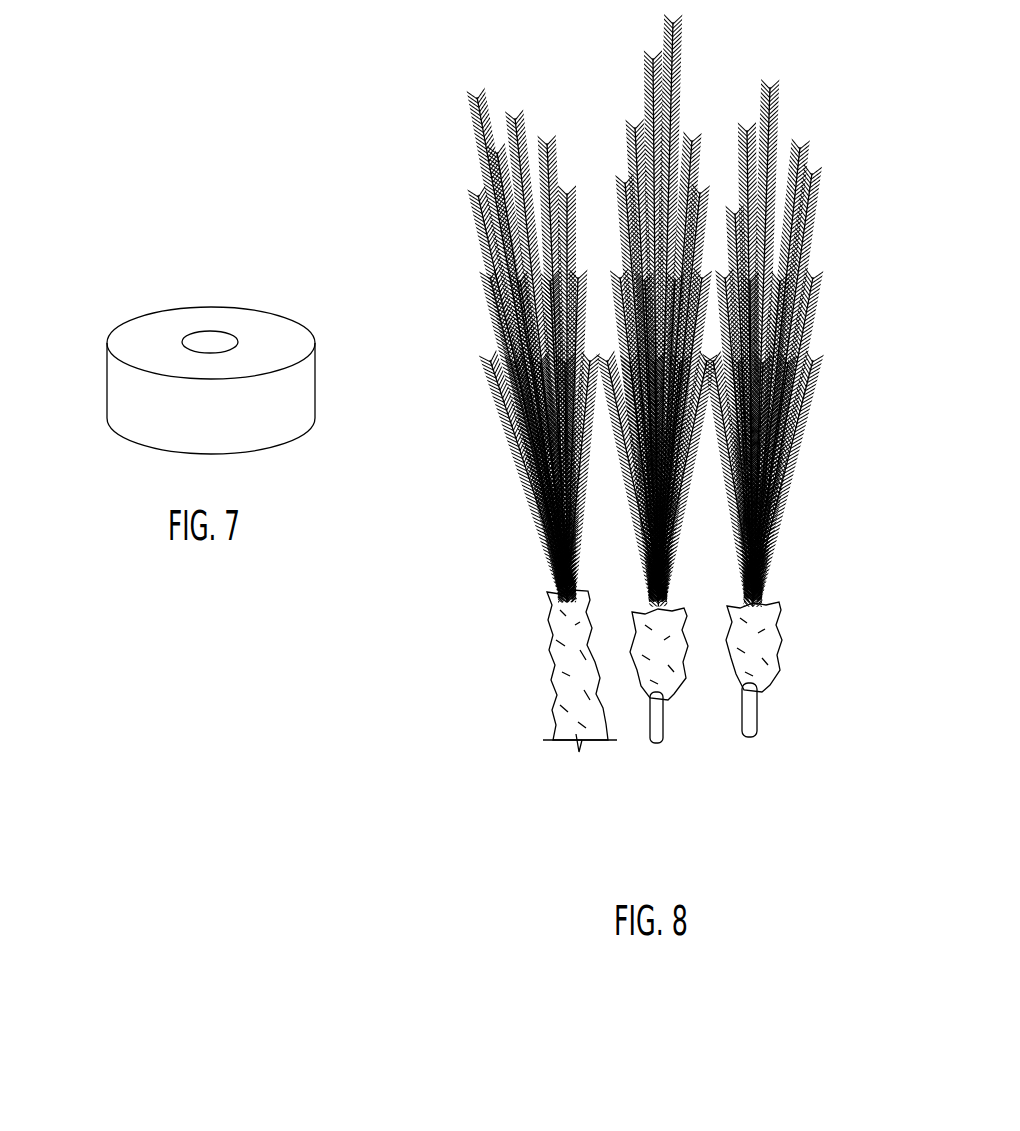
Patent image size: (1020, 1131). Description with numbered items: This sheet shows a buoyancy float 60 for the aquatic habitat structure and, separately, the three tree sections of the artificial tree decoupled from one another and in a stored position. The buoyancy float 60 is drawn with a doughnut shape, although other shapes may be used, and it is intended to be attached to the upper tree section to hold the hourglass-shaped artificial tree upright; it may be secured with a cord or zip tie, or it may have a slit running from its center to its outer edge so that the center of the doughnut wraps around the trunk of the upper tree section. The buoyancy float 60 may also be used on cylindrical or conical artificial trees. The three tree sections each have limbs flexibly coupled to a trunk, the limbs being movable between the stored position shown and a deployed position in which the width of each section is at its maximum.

The buoyancy float 60 is at (107, 390).